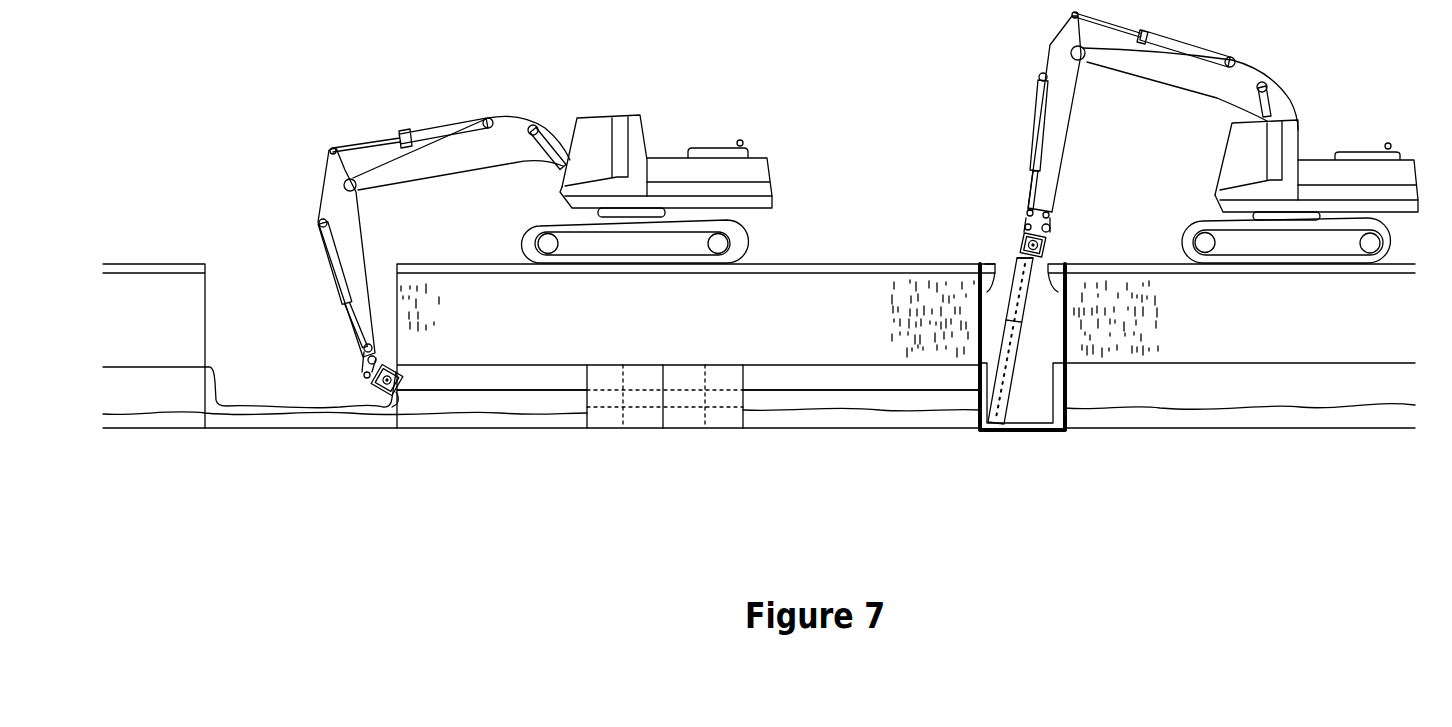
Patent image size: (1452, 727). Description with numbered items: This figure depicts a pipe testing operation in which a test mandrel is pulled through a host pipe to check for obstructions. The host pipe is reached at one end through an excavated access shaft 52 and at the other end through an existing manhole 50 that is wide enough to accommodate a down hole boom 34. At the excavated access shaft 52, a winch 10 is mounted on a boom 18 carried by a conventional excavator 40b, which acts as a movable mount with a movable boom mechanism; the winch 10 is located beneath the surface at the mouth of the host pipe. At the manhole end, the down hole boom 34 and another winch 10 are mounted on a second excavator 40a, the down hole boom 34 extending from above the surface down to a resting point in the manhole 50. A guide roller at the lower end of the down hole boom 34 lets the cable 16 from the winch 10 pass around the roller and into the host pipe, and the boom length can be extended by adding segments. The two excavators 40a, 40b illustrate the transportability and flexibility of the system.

The excavated access shaft 52 is at (217, 188).
The boom 18 is at (325, 243).
The winch 10 is at (367, 380).
The cable 16 is at (505, 388).
The excavator 40b is at (665, 132).
The excavator 40a is at (1317, 137).
The manhole 50 is at (1040, 263).
The down hole boom 34 is at (1010, 382).